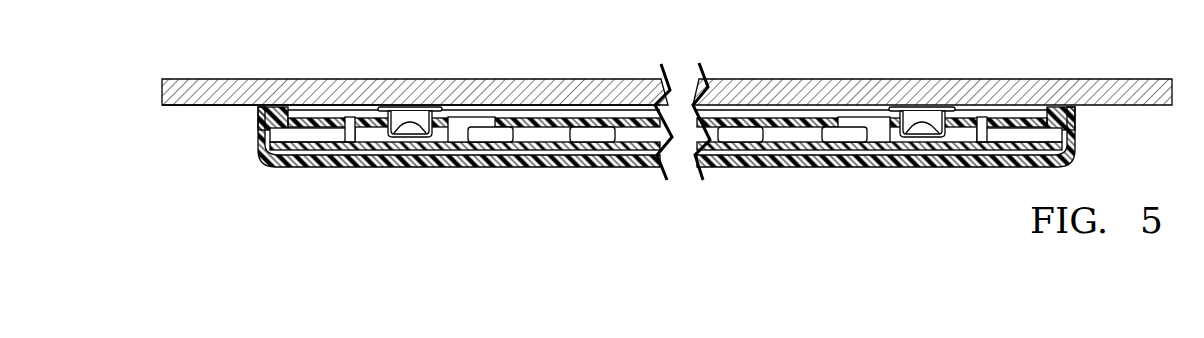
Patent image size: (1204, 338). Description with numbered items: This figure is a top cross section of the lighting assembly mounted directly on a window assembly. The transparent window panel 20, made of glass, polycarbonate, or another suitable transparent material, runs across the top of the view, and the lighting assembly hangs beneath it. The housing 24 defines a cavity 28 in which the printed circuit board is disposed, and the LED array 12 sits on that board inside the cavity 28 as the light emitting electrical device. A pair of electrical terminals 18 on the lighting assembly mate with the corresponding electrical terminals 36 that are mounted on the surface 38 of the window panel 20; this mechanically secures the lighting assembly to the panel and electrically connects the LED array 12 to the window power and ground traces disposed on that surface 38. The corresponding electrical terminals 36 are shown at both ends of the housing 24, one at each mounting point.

The light emitting diode (LED) array 12 is at (593, 130).
The electrical terminals 18 is at (381, 135).
The window panel 20 is at (227, 78).
The housing 24 is at (437, 160).
The cavity 28 is at (527, 120).
The corresponding electrical terminals 36 is at (401, 118).
The surface of the window panel 38 is at (192, 106).